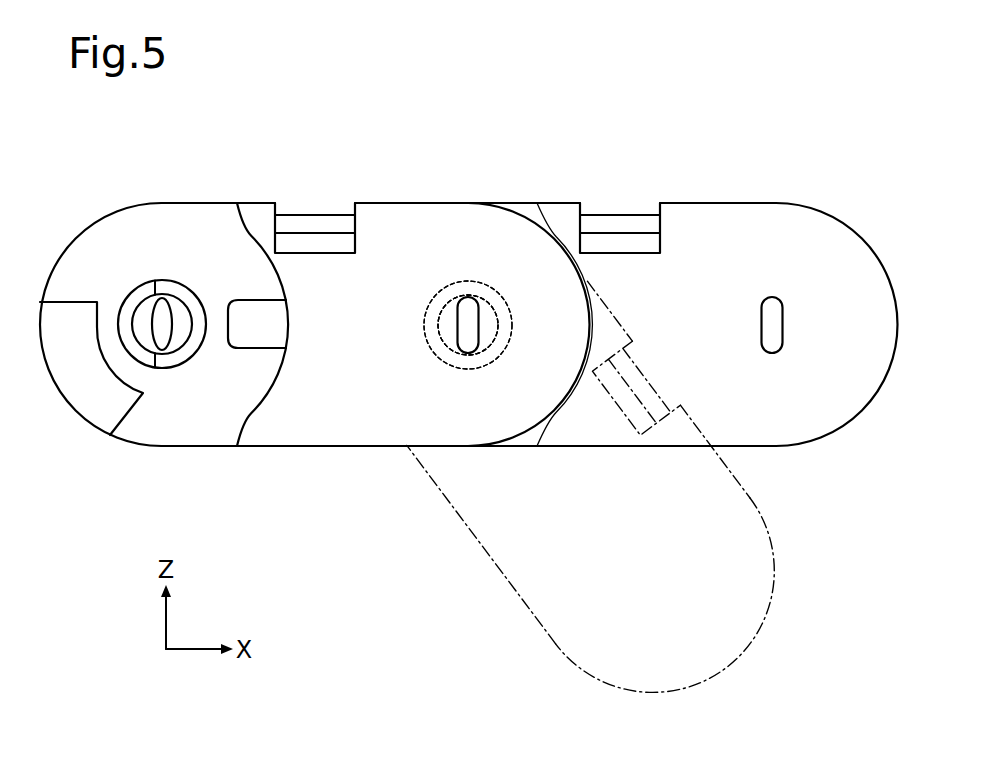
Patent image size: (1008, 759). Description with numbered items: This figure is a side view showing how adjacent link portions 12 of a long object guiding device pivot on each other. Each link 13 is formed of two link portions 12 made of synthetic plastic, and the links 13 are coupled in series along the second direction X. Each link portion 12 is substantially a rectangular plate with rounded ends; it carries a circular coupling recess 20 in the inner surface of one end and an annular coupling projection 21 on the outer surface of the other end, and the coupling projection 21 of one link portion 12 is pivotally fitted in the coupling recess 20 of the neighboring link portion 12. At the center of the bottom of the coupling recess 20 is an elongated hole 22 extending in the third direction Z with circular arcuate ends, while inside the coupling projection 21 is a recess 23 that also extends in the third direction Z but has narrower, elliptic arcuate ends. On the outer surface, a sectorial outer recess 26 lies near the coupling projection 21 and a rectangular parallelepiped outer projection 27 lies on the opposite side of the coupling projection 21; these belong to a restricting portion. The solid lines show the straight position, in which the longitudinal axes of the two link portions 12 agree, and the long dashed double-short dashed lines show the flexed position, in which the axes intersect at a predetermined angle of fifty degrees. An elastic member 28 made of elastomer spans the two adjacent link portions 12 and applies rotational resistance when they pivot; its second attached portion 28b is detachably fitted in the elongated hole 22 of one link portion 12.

The link portion 12 is at (192, 202).
The link 13 is at (469, 444).
The coupling recess 20 is at (442, 303).
The coupling projection 21 is at (185, 355).
The elongated hole 22 is at (475, 322).
The recess 23 is at (168, 314).
The outer recess 26 is at (72, 397).
The outer projection 27 is at (264, 322).
The elastic member 28 is at (462, 340).
The second attached portion 28b is at (457, 323).